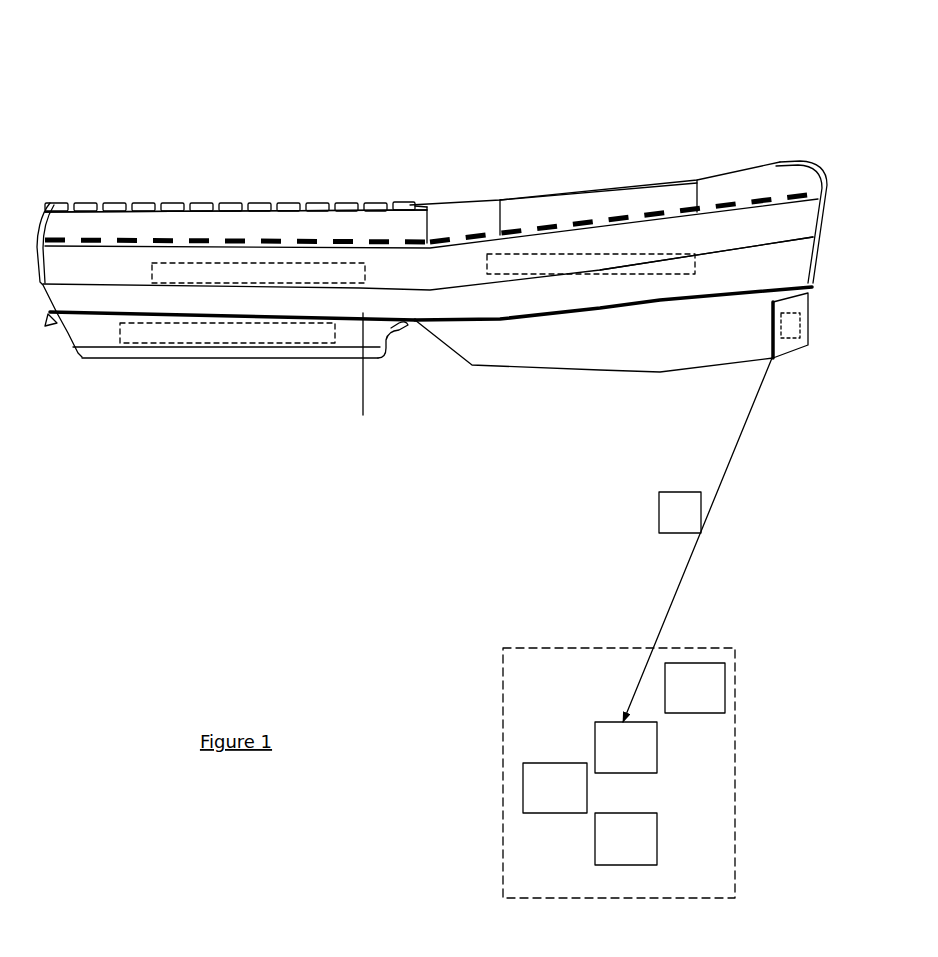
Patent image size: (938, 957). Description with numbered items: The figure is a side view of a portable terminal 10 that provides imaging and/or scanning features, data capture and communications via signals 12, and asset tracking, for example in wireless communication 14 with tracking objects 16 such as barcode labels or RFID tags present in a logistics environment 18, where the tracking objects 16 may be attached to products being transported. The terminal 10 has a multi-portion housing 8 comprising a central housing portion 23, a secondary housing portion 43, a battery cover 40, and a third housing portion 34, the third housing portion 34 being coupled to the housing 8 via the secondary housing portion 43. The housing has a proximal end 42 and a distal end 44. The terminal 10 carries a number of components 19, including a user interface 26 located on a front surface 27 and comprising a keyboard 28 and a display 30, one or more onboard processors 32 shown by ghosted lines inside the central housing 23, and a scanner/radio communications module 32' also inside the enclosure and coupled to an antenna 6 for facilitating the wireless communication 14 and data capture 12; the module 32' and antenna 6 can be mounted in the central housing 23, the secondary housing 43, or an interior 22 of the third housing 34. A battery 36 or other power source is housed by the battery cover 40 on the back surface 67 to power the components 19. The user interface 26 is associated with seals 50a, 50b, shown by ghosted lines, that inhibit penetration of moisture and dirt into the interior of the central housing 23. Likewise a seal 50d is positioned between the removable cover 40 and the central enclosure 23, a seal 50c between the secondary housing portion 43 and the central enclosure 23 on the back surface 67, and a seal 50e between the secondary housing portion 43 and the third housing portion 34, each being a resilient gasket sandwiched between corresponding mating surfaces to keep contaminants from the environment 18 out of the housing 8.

The proximal end 42 is at (37, 196).
The distal end 44 is at (828, 152).
The seal 50b is at (165, 237).
The seal 50a is at (713, 203).
The front surface 27 is at (192, 150).
The keyboard 28 is at (283, 218).
The onboard processor 32 is at (259, 198).
The scanner/radio communications module 32' is at (591, 168).
The components 19 is at (362, 80).
The user interface 26 is at (485, 170).
The display 30 is at (628, 202).
The multi-portion housing 8 is at (698, 112).
The central housing portion 23 is at (706, 253).
The secondary housing portion 43 is at (594, 346).
The battery cover 40 is at (207, 333).
The battery 36 is at (173, 333).
The seal 50d is at (342, 376).
The back surface 67 is at (423, 376).
The seal 50c is at (602, 308).
The interior of the third housing 22 is at (775, 323).
The antenna 6 is at (791, 340).
The third housing portion 34 is at (800, 345).
The signals 12 is at (740, 444).
The seal 50e is at (773, 360).
The wireless communication 14 is at (680, 512).
The tracking objects 16 is at (624, 764).
The logistics environment 18 is at (619, 773).
The portable terminal 10 is at (302, 516).